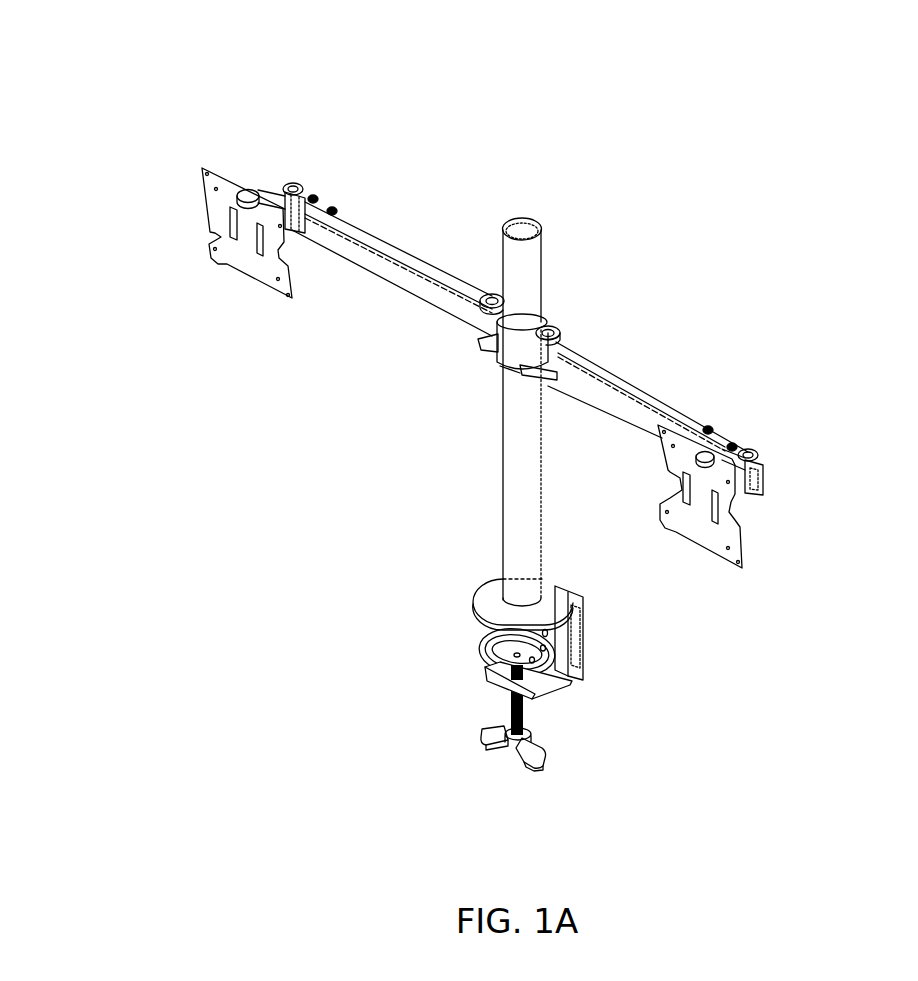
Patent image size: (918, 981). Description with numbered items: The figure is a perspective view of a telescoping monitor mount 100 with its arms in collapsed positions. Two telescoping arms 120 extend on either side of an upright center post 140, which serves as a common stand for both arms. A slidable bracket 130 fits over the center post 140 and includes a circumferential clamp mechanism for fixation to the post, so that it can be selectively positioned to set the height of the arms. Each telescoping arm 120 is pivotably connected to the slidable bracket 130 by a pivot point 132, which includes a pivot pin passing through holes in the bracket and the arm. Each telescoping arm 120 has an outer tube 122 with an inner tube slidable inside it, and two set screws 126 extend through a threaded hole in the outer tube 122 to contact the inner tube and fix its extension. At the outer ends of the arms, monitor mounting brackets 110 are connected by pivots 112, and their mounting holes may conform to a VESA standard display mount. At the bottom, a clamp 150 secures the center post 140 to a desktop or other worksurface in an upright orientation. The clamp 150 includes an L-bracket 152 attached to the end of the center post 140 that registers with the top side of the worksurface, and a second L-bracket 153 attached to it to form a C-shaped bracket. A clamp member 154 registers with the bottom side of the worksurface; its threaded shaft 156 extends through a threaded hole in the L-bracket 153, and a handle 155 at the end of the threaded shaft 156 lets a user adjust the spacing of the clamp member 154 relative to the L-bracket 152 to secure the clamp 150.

The telescoping monitor mount 100 is at (97, 98).
The monitor mounting bracket 110 is at (220, 247).
The pivot 112 is at (290, 184).
The telescoping arm 120 is at (372, 237).
The outer tube 122 is at (403, 263).
The set screw 126 is at (313, 197).
The slidable bracket 130 is at (494, 347).
The pivot point 132 is at (492, 295).
The center post 140 is at (518, 543).
The clamp 150 is at (483, 613).
The L-bracket 152 is at (580, 610).
The L-bracket 153 is at (555, 677).
The clamp member 154 is at (503, 652).
The handle 155 is at (493, 747).
The threaded shaft 156 is at (523, 723).